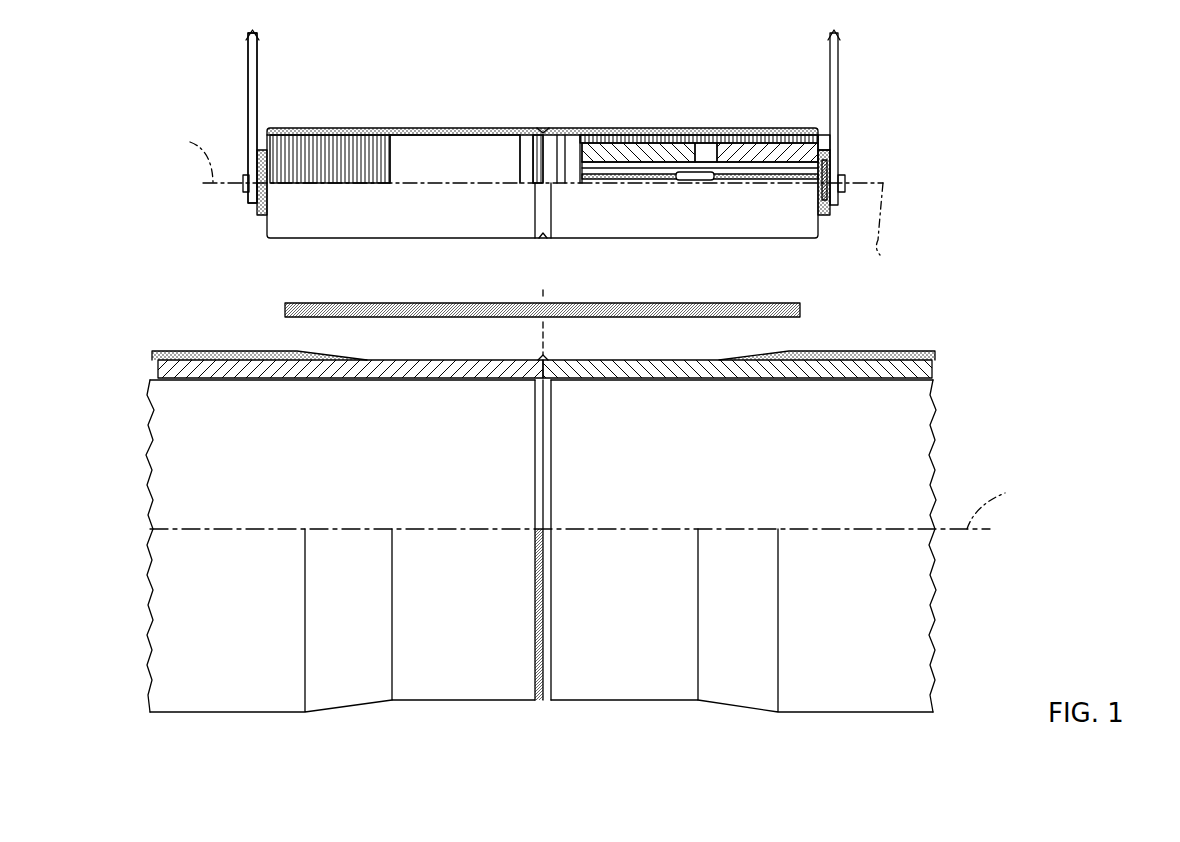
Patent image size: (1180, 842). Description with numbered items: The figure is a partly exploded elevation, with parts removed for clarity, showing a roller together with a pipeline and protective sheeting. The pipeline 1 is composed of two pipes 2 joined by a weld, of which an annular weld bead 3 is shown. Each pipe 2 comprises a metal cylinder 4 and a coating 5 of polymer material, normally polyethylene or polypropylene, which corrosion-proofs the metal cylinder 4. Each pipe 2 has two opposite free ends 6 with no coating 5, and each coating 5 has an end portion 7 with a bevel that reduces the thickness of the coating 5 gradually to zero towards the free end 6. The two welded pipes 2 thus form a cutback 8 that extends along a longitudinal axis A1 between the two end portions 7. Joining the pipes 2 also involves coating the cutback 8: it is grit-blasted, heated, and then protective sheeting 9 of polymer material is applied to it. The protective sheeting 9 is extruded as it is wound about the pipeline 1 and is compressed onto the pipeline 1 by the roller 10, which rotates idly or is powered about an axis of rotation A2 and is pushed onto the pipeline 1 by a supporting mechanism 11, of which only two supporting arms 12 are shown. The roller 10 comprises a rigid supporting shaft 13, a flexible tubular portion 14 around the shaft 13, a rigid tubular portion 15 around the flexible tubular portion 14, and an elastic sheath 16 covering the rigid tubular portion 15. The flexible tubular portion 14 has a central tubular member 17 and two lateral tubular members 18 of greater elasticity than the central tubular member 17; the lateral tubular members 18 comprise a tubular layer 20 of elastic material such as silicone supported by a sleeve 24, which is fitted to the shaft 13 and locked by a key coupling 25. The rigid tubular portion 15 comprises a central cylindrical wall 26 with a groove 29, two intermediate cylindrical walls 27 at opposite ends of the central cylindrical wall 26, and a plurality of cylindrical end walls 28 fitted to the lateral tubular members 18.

The pipeline 1 is at (983, 340).
The pipe 2 is at (536, 329).
The annular weld bead 3 is at (548, 703).
The metal cylinder 4 is at (157, 368).
The coating 5 is at (222, 352).
The free end 6 is at (452, 705).
The end portion 7 is at (360, 712).
The cutback 8 is at (541, 603).
The protective sheeting 9 is at (680, 300).
The roller 10 is at (546, 165).
The supporting mechanism 11 is at (236, 90).
The supporting arm 12 is at (256, 70).
The rigid supporting shaft 13 is at (828, 172).
The flexible tubular portion 14 is at (820, 142).
The rigid tubular portion 15 is at (830, 133).
The elastic sheath 16 is at (417, 210).
The central tubular member 17 is at (640, 150).
The lateral tubular member 18 is at (770, 165).
The tubular layer 20 is at (712, 180).
The sleeve 24 is at (735, 180).
The key coupling 25 is at (706, 158).
The central cylindrical wall 26 is at (562, 132).
The intermediate cylindrical wall 27 is at (487, 128).
The cylindrical end wall 28 is at (280, 132).
The groove 29 is at (548, 240).
The longitudinal axis A1 is at (590, 500).
The axis of rotation A2 is at (529, 200).